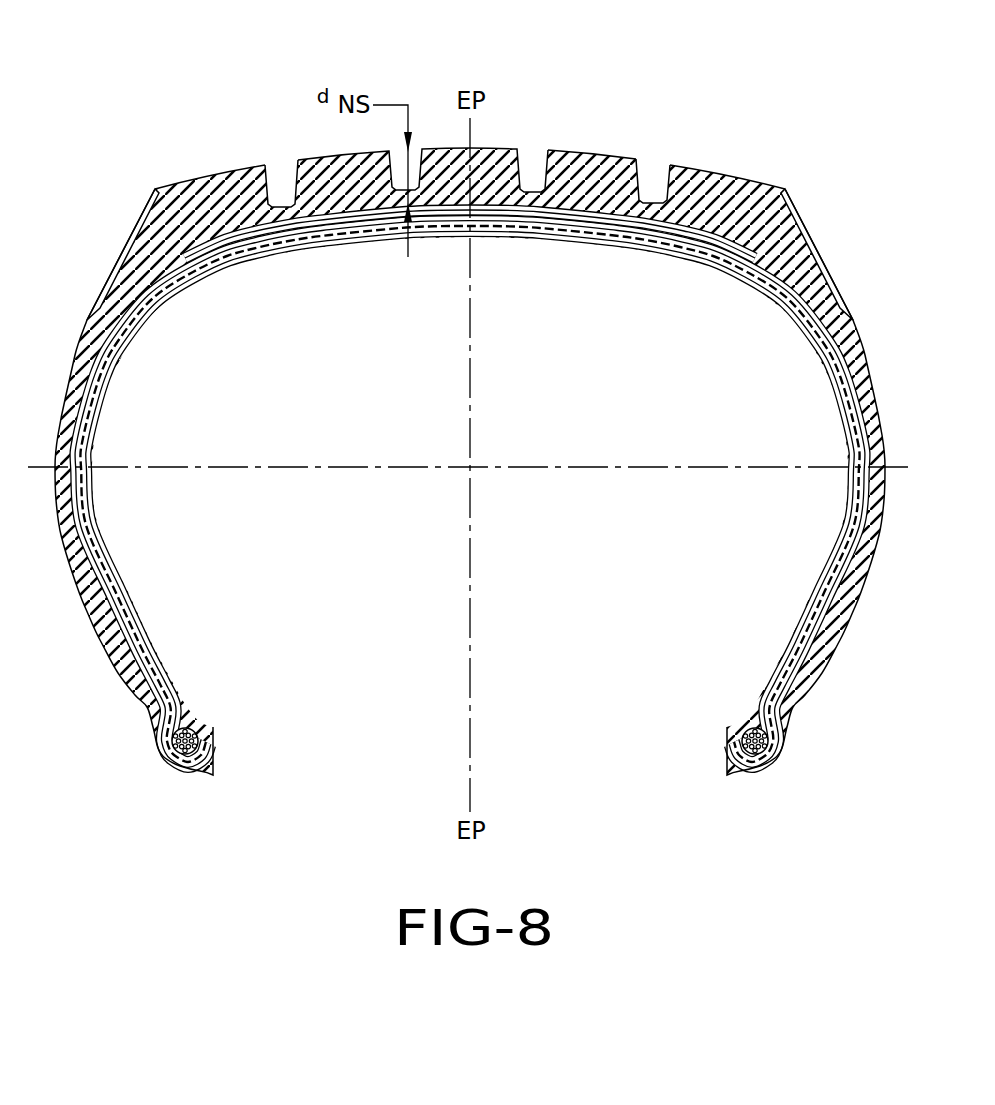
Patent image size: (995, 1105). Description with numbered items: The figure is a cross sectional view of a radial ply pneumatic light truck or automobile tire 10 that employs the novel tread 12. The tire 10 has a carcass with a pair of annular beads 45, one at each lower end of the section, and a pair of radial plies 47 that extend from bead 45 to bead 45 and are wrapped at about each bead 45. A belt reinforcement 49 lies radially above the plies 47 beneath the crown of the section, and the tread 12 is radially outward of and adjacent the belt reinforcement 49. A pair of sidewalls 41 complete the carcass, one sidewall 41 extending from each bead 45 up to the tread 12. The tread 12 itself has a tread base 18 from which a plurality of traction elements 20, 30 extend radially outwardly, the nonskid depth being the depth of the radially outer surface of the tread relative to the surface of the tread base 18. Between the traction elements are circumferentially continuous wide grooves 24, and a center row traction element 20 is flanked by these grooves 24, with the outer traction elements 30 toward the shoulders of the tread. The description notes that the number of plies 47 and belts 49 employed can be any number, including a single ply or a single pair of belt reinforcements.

The tire 10 is at (130, 190).
The tread 12 is at (495, 135).
The tread base 18 is at (287, 203).
The traction element 20 is at (569, 150).
The circumferentially continuous wide groove 24 is at (652, 188).
The traction element 30 is at (240, 160).
The sidewall 41 is at (62, 393).
The annular bead 45 is at (188, 748).
The radial ply 47 is at (93, 531).
The belt reinforcement 49 is at (506, 213).